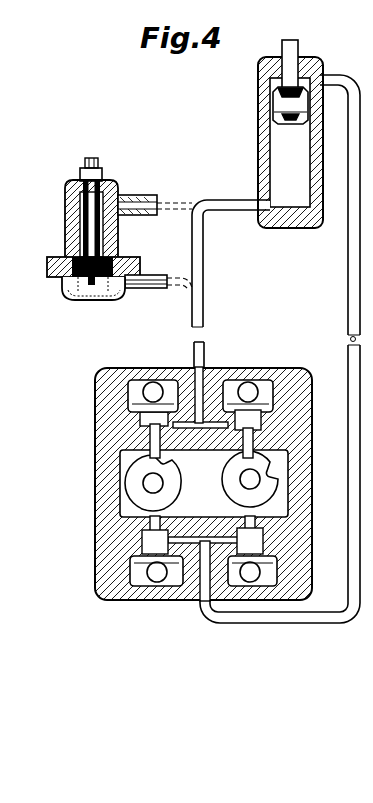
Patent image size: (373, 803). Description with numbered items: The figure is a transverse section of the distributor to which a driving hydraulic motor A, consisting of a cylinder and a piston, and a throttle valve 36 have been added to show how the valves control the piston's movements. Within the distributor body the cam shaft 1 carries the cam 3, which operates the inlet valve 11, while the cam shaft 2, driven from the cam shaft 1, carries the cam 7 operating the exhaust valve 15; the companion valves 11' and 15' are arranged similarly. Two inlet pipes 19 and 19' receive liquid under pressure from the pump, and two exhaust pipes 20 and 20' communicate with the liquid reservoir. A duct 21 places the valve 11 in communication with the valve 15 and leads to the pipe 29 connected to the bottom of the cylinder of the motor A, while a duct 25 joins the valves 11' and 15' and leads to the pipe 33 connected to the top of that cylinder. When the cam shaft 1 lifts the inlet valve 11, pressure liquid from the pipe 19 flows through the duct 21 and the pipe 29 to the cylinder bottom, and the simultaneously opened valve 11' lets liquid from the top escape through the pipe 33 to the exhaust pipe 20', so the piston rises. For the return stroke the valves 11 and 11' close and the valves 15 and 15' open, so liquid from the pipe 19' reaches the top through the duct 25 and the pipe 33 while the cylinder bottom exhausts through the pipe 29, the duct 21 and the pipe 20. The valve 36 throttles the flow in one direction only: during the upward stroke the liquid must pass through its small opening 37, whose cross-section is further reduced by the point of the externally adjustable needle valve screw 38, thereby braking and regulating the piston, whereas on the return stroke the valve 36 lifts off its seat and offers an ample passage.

The motor A is at (278, 155).
The cam shaft 1 is at (254, 481).
The cam shaft 2 is at (140, 492).
The cam 3 is at (256, 466).
The cam 7 is at (130, 475).
The inlet valve 11 is at (217, 465).
The exhaust valve 11' is at (287, 537).
The exhaust valve 15 is at (107, 414).
The valve 15' is at (98, 561).
The inlet pipe 19 is at (257, 391).
The inlet pipe 19' is at (138, 605).
The exhaust pipe 20 is at (150, 377).
The exhaust pipe 20' is at (274, 583).
The duct 21 is at (212, 376).
The duct 25 is at (200, 560).
The pipe 29 is at (207, 343).
The pipe 33 is at (210, 624).
The valve 36 is at (62, 283).
The opening 37 is at (88, 302).
The needle valve screw 38 is at (65, 197).